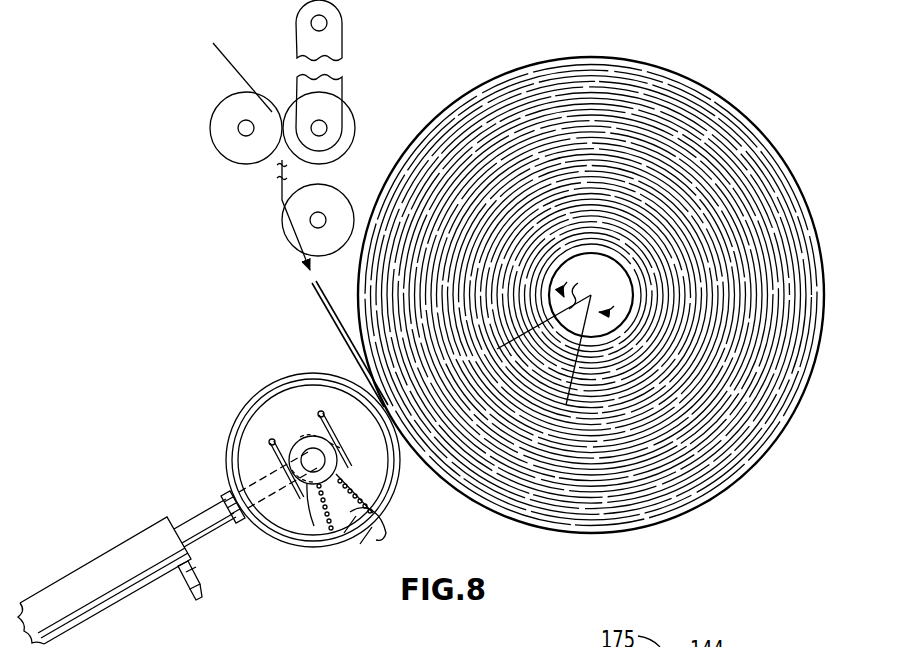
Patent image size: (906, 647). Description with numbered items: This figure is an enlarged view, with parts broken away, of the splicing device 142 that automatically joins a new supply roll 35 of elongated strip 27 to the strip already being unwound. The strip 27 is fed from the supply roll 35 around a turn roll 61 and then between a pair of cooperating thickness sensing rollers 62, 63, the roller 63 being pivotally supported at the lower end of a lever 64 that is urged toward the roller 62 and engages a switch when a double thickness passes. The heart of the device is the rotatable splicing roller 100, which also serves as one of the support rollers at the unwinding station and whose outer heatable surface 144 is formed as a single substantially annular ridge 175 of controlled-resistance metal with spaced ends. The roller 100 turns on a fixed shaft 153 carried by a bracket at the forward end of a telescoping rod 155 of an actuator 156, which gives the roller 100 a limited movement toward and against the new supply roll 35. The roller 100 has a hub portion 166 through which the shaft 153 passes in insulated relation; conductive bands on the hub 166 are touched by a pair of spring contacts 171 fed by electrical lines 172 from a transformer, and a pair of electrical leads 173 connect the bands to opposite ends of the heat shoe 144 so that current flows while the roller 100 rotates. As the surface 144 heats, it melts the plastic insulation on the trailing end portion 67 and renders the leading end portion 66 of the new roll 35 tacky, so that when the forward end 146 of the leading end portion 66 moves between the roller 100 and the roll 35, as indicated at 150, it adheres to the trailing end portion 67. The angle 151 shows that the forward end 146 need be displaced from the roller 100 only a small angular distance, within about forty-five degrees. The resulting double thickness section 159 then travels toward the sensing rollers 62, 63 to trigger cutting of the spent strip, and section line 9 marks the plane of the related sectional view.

The supply roll 35 is at (718, 101).
The angle 151 is at (578, 300).
The section line 9- 9 is at (427, 408).
The thickness sensing roller 62 is at (215, 137).
The thickness sensing roller 63 is at (350, 124).
The lever 64 is at (340, 45).
The turn roll 61 is at (333, 196).
The elongated strip 27 is at (300, 258).
The leading end portion 66 is at (316, 282).
The double thickness section 159 is at (319, 298).
The trailing end portion 67 is at (331, 318).
The splicing position 150 is at (368, 386).
The splicing device 142 is at (222, 427).
The splicing roller 100 is at (222, 465).
The spring contacts 171 is at (312, 437).
The electrical lines 172 is at (321, 414).
The telescoping rod 155 is at (205, 517).
The actuator 156 is at (83, 576).
The annular ridge 175 is at (266, 538).
The hub portion 166 is at (318, 492).
The electrical leads 173 is at (381, 531).
The heatable outer surface 144 is at (322, 546).
The forward end 146 is at (460, 488).
The shaft 153 is at (332, 463).